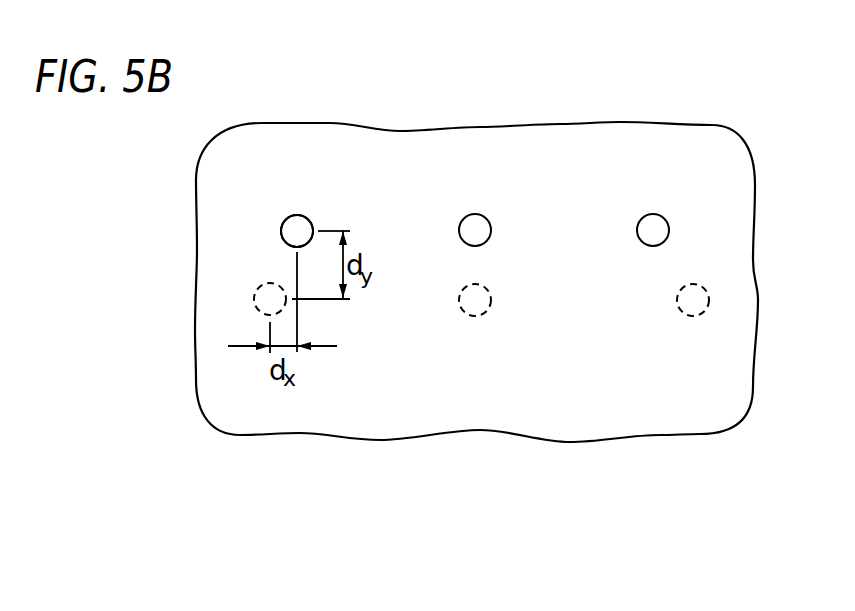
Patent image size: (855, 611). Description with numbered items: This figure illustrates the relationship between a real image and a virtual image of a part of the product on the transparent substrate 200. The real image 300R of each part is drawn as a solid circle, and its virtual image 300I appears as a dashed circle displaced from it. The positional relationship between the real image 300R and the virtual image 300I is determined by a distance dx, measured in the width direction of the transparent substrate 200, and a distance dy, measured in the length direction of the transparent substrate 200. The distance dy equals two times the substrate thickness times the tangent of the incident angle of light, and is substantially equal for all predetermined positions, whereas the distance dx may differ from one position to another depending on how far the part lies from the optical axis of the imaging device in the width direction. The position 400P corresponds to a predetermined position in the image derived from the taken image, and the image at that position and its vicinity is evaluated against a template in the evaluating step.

The transparent substrate 200 is at (573, 148).
The real image 300R is at (303, 217).
The virtual image 300I is at (265, 283).
The position corresponding to the predetermined position 400P is at (288, 222).